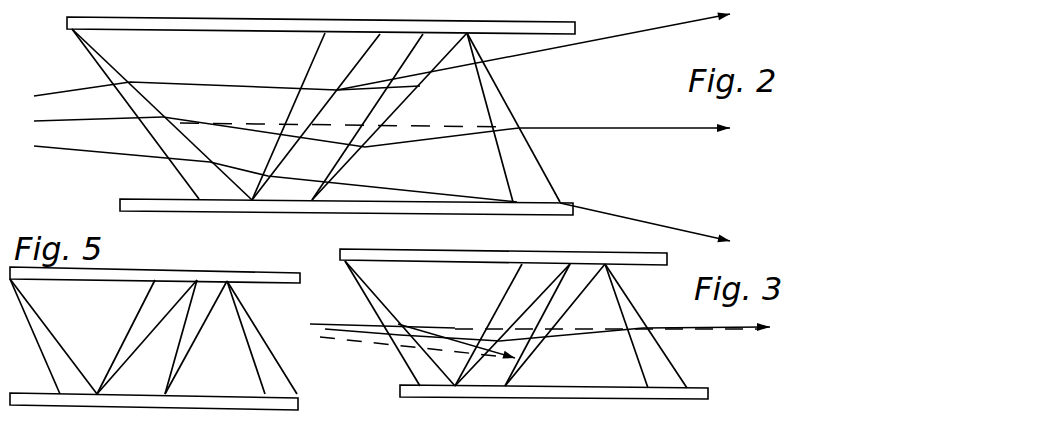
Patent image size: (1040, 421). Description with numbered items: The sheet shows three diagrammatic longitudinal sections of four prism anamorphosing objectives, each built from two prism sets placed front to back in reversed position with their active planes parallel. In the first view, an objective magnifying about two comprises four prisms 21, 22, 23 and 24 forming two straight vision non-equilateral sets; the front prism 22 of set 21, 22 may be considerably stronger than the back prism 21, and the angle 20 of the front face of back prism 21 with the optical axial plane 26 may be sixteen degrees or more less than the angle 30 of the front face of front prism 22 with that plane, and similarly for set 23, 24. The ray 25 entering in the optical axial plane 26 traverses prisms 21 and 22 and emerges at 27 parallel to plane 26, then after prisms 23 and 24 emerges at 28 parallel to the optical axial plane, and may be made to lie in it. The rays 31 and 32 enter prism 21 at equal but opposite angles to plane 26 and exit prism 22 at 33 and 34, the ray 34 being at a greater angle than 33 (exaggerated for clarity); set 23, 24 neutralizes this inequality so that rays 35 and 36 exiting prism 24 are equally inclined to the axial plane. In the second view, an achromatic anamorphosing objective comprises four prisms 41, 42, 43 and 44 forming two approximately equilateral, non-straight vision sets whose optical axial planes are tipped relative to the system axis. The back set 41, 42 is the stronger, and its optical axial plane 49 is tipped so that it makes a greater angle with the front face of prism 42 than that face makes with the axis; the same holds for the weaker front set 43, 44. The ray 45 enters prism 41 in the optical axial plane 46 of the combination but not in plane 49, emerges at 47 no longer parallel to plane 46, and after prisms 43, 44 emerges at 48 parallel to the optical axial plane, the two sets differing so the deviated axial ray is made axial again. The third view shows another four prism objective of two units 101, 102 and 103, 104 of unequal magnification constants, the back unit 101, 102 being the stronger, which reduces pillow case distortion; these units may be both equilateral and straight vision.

In FIG. 2, the angle of the front face of the back prism with the optical axial plane 20 is at (125, 93).
In FIG. 2, the back prism 21 is at (162, 114).
In FIG. 2, the front prism 22 is at (316, 116).
In FIG. 2, the prism 23 is at (389, 116).
In FIG. 2, the prism 24 is at (513, 117).
In FIG. 2, the ray 25 is at (49, 121).
In FIG. 2, the optical axial plane 26 is at (235, 124).
In FIG. 2, the ray emergence point (after prisms 21 and 22) 27 is at (309, 140).
In FIG. 2, the ray emergence point (after prisms 23 and 24) 28 is at (624, 125).
In FIG. 2, the angle of the front face of the front prism with the optical axial plane 30 is at (362, 120).
In FIG. 2, the ray 31 is at (40, 96).
In FIG. 2, the ray 32 is at (44, 150).
In FIG. 2, the exit ray 33 is at (356, 84).
In FIG. 2, the exit ray 34 is at (289, 180).
In FIG. 2, the exiting ray 35 is at (650, 25).
In FIG. 2, the exiting ray 36 is at (651, 225).
In FIG. 3, the prism 41 is at (400, 323).
In FIG. 3, the front prism of the back set 42 is at (512, 325).
In FIG. 3, the prism 43 is at (555, 325).
In FIG. 3, the prism 44 is at (646, 326).
In FIG. 3, the ray 45 is at (322, 324).
In FIG. 3, the optical axial plane of the combination 46 is at (578, 328).
In FIG. 3, the ray emergence point (after prisms 41 and 42) 47 is at (521, 348).
In FIG. 3, the ray emergence point (after prisms 43 and 44) 48 is at (714, 328).
In FIG. 3, the optical axial plane of the set 49 is at (352, 343).
In FIG. 5, the prism 101 is at (53, 336).
In FIG. 5, the prism 102 is at (147, 337).
In FIG. 5, the prism 103 is at (196, 337).
In FIG. 5, the prism 104 is at (262, 337).